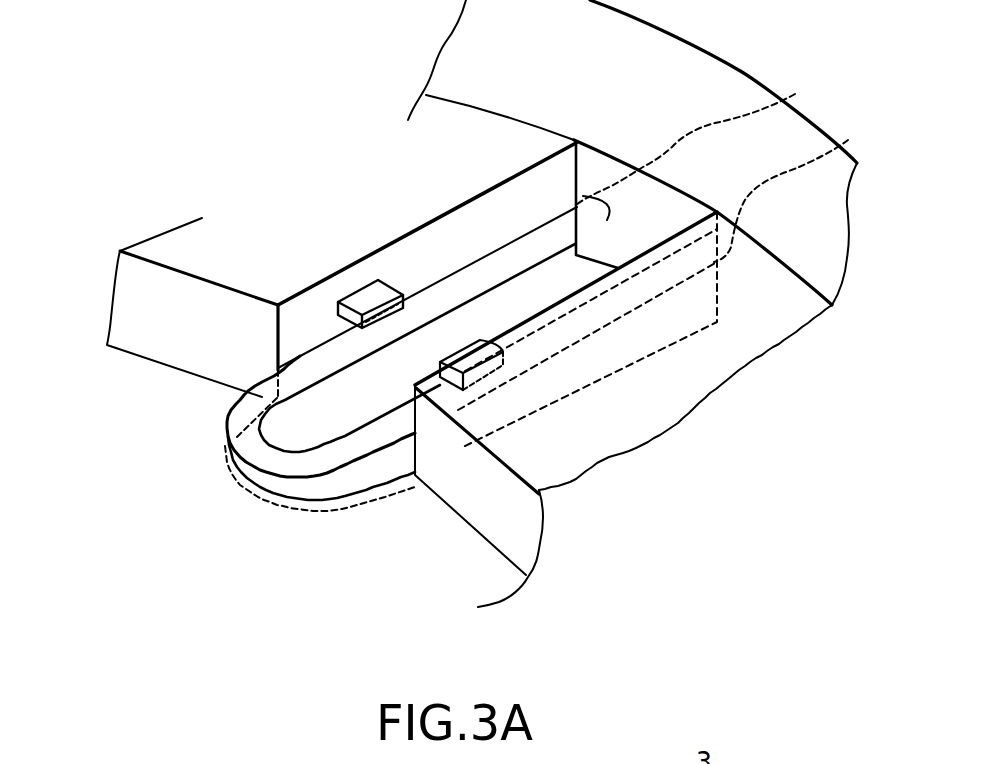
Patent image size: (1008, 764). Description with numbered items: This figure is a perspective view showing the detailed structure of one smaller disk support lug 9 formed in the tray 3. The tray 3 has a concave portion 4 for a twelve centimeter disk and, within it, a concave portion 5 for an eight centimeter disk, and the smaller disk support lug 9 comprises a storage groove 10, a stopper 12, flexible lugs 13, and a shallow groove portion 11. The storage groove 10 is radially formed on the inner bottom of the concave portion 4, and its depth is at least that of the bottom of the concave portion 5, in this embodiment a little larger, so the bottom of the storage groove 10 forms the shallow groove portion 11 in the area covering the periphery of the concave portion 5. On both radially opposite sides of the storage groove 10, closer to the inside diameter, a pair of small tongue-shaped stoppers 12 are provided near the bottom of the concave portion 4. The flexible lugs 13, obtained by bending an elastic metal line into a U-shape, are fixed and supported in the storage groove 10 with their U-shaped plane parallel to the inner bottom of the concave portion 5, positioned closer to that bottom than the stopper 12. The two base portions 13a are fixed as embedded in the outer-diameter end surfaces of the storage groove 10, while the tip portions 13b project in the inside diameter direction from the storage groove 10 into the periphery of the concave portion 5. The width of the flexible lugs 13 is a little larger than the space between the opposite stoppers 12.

The tray 3 is at (737, 90).
The concave portion for a 12 cm disk 4 is at (704, 382).
The concave portion for an 8 cm disk 5 is at (494, 580).
The smaller disk support lug 9 is at (120, 16).
The storage groove 10 is at (415, 257).
The shallow groove portion 11 is at (369, 478).
The stopper 12 is at (367, 292).
The flexible lug 13 is at (243, 407).
The base portion 13a is at (795, 94).
The tip portion 13b is at (295, 460).